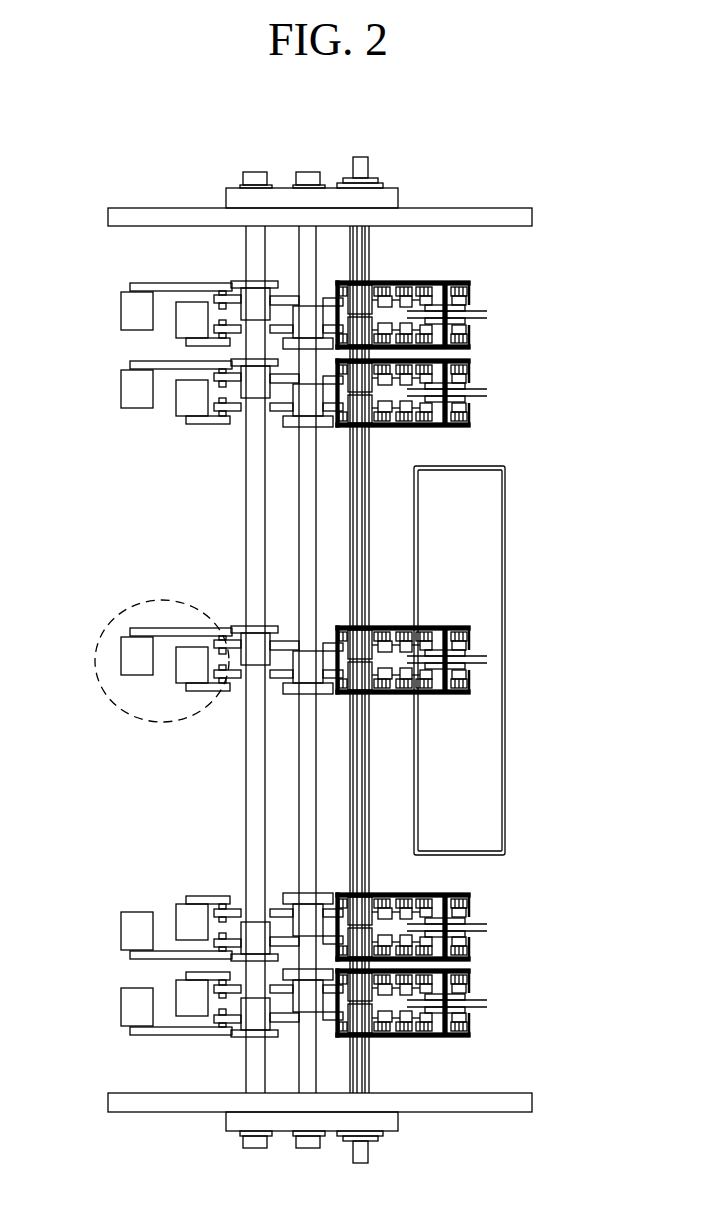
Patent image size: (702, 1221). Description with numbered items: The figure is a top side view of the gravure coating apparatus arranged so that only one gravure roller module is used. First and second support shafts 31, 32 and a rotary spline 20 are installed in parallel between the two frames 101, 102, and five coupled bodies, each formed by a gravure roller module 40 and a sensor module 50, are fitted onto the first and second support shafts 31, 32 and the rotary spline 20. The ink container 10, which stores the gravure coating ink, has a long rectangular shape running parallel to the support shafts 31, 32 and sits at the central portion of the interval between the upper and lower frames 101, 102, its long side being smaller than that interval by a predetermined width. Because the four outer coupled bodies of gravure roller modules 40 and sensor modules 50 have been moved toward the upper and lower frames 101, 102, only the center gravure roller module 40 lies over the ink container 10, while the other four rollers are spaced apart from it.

The ink container 10 is at (500, 532).
The rotary spline 20 is at (360, 157).
The first support shaft 31 is at (309, 172).
The second support shaft 32 is at (257, 172).
The gravure roller module 40 is at (390, 697).
The sensor module 50 is at (122, 680).
The frame 101 is at (470, 208).
The frame 102 is at (508, 1093).